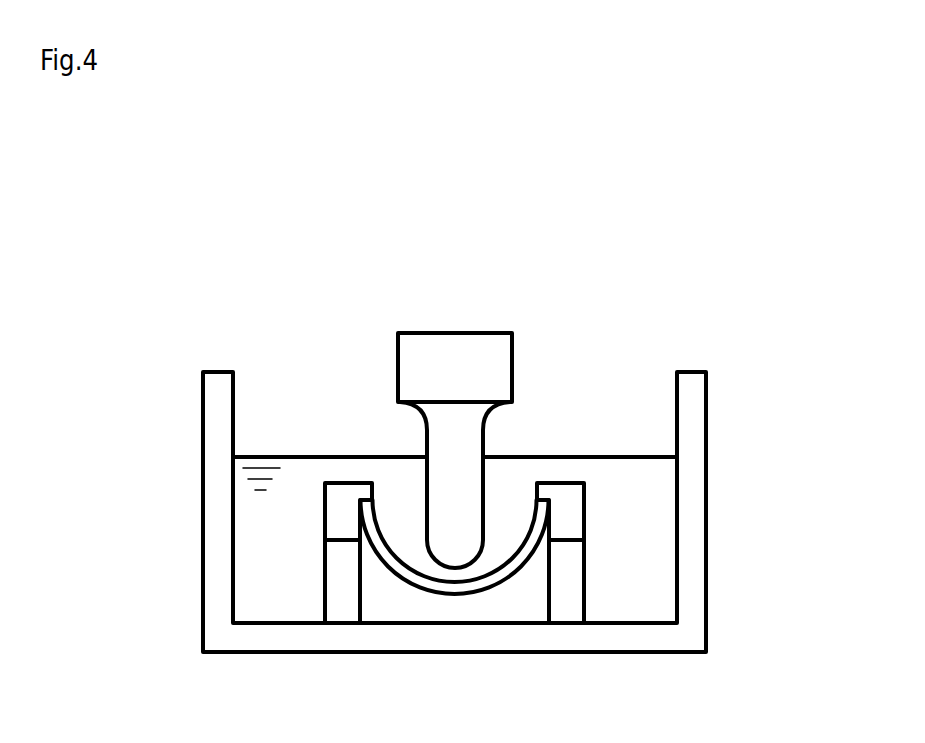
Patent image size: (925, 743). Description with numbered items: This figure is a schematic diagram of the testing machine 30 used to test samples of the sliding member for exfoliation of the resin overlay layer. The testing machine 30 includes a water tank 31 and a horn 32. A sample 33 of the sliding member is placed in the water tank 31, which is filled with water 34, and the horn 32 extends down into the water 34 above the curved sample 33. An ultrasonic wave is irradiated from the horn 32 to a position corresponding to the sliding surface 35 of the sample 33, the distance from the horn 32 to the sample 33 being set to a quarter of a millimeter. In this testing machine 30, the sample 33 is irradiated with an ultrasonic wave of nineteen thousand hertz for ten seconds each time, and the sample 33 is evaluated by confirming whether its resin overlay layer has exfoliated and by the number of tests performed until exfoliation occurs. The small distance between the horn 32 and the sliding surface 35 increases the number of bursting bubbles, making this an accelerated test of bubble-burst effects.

The testing machine 30 is at (682, 312).
The water tank 31 is at (706, 408).
The horn 32 is at (485, 428).
The sample 33 is at (393, 572).
The water 34 is at (253, 523).
The sliding surface 35 is at (482, 578).